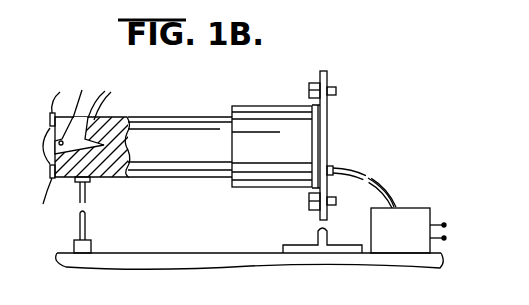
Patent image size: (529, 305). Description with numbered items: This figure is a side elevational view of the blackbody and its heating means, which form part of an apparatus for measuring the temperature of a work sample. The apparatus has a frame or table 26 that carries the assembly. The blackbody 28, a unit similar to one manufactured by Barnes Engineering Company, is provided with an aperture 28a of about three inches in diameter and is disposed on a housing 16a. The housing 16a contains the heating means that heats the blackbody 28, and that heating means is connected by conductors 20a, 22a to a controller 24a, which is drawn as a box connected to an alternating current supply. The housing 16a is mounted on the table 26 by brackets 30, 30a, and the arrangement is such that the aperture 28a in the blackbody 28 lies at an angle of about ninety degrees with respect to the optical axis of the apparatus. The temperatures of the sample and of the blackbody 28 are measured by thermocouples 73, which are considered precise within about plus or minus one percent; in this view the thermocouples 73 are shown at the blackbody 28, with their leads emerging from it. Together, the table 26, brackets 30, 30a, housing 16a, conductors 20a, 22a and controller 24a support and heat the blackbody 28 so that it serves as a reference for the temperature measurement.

The thermocouples 73 is at (58, 146).
The aperture 28a is at (90, 97).
The blackbody 28 is at (177, 178).
The housing 16a is at (268, 188).
The conductor 20a is at (356, 171).
The conductor 22a is at (388, 192).
The controller 24a is at (425, 235).
The bracket 30a is at (87, 225).
The table 26 is at (178, 252).
The bracket 30 is at (318, 237).